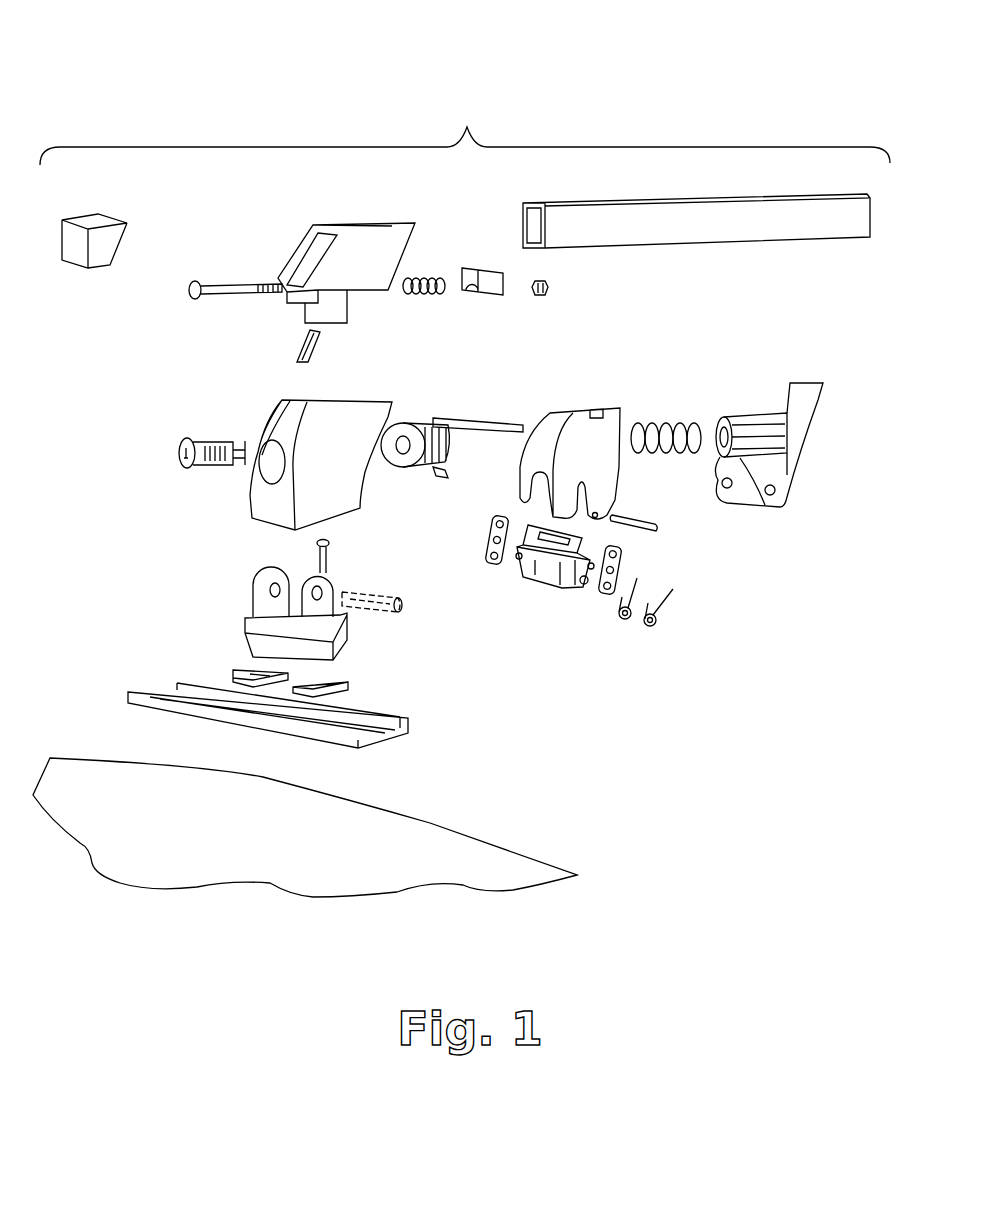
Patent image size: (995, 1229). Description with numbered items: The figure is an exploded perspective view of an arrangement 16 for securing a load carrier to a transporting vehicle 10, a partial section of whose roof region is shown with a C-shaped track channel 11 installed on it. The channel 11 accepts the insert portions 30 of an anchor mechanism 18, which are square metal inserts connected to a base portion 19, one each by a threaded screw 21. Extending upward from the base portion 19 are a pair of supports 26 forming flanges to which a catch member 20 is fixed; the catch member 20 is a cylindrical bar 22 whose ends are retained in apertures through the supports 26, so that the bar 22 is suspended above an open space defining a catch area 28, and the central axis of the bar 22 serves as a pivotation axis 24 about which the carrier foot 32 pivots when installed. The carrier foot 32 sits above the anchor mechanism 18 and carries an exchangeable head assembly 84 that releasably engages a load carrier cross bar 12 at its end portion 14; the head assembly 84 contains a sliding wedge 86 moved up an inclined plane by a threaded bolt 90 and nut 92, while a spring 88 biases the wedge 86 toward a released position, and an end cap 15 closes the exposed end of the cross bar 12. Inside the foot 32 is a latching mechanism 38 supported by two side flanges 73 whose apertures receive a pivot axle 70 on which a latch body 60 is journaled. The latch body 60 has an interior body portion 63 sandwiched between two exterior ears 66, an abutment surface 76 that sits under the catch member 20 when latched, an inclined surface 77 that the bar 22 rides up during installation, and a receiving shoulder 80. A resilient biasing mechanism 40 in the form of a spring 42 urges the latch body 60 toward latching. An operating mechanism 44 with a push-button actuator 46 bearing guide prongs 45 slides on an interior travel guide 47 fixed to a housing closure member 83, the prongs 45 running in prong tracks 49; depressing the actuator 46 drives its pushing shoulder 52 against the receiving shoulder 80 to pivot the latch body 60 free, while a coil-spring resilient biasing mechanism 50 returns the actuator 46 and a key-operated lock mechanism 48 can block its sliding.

The transporting vehicle 10 is at (305, 827).
The track channel 11 is at (325, 738).
The load carrier cross bar 12 is at (725, 228).
The end portion 14 is at (607, 252).
The end cap 15 is at (72, 250).
The arrangement for securing a load carrier 16 is at (77, 97).
The anchor mechanism 18 is at (160, 594).
The base portion 19 is at (255, 638).
The catch member 20 is at (385, 590).
The threaded screw 21 is at (317, 553).
The cylindrical bar 22 is at (372, 607).
The pivotation axis 24 is at (405, 600).
The supports 26 is at (245, 575).
The catch area 28 is at (272, 596).
The insert portions 30 is at (330, 692).
The carrier foot 32 is at (385, 135).
The latching mechanism 38 is at (637, 382).
The resilient biasing mechanism 40 is at (668, 640).
The spring 42 is at (668, 610).
The operating mechanism 44 is at (428, 412).
The guide prongs 45 is at (498, 405).
The push-button actuator 46 is at (400, 470).
The interior travel guide 47 is at (775, 437).
The lock mechanism 48 is at (170, 452).
The prong tracks 49 is at (780, 400).
The resilient biasing mechanism 50 is at (678, 420).
The pushing shoulder 52 is at (440, 475).
The latch body 60 is at (570, 606).
The interior body portion 63 is at (522, 565).
The exterior ears 66 is at (497, 553).
The pivot axle 70 is at (632, 516).
The side flanges 73 is at (570, 463).
The abutment surface 76 is at (565, 558).
The inclined surface 77 is at (485, 548).
The receiving shoulder 80 is at (253, 415).
The housing closure member 83 is at (788, 470).
The exchangeable head assembly 84 is at (185, 335).
The sliding wedge 86 is at (478, 262).
The spring 88 is at (428, 298).
The threaded bolt 90 is at (232, 280).
The nut 92 is at (532, 302).